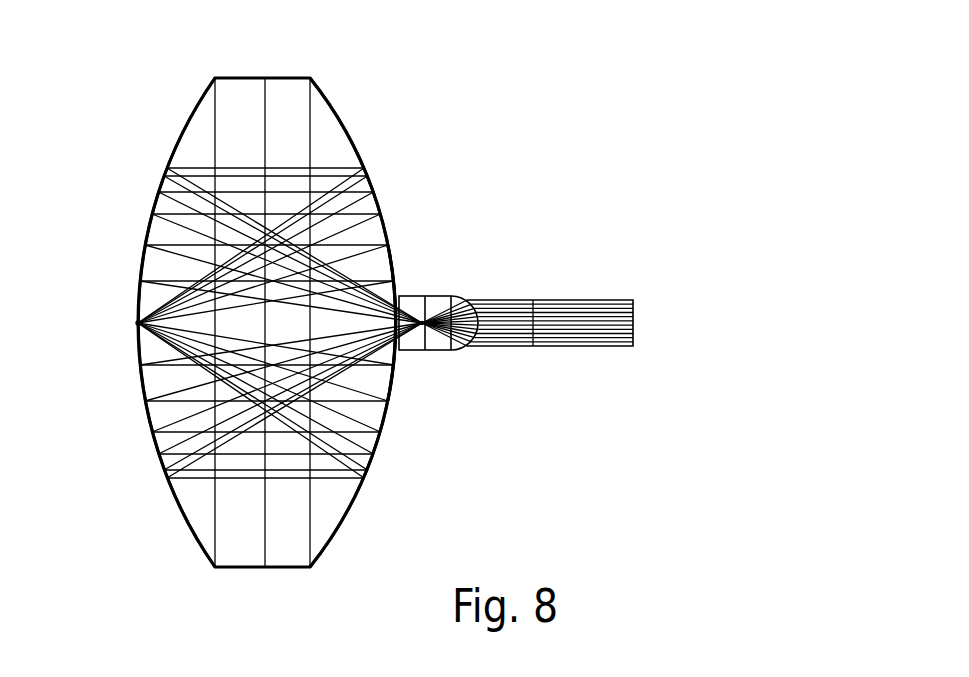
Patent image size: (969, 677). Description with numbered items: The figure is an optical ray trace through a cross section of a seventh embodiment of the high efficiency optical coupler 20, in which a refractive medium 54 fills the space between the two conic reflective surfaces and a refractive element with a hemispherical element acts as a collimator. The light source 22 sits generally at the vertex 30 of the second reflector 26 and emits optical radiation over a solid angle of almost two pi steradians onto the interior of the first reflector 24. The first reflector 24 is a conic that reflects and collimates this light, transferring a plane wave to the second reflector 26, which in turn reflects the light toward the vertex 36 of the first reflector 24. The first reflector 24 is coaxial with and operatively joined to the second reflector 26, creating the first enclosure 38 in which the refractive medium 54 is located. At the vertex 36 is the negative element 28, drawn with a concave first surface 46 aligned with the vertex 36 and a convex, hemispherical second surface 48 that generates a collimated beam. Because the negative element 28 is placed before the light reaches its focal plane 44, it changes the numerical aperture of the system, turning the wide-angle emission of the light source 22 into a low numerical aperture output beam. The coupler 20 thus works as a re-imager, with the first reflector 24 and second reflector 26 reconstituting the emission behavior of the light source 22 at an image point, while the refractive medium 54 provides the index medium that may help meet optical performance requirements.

The high efficiency optical coupler 20 is at (570, 135).
The light source 22 is at (138, 323).
The first reflector 24 is at (356, 150).
The second reflector 26 is at (172, 153).
The negative element 28 is at (435, 303).
The vertex of the second reflector 30 is at (138, 323).
The vertex of the first reflector 36 is at (393, 332).
The first enclosure 38 is at (192, 503).
The focal plane 44 is at (424, 326).
The concave first surface 46 is at (395, 310).
The hemispherical second surface 48 is at (477, 307).
The refractive medium 54 is at (252, 112).